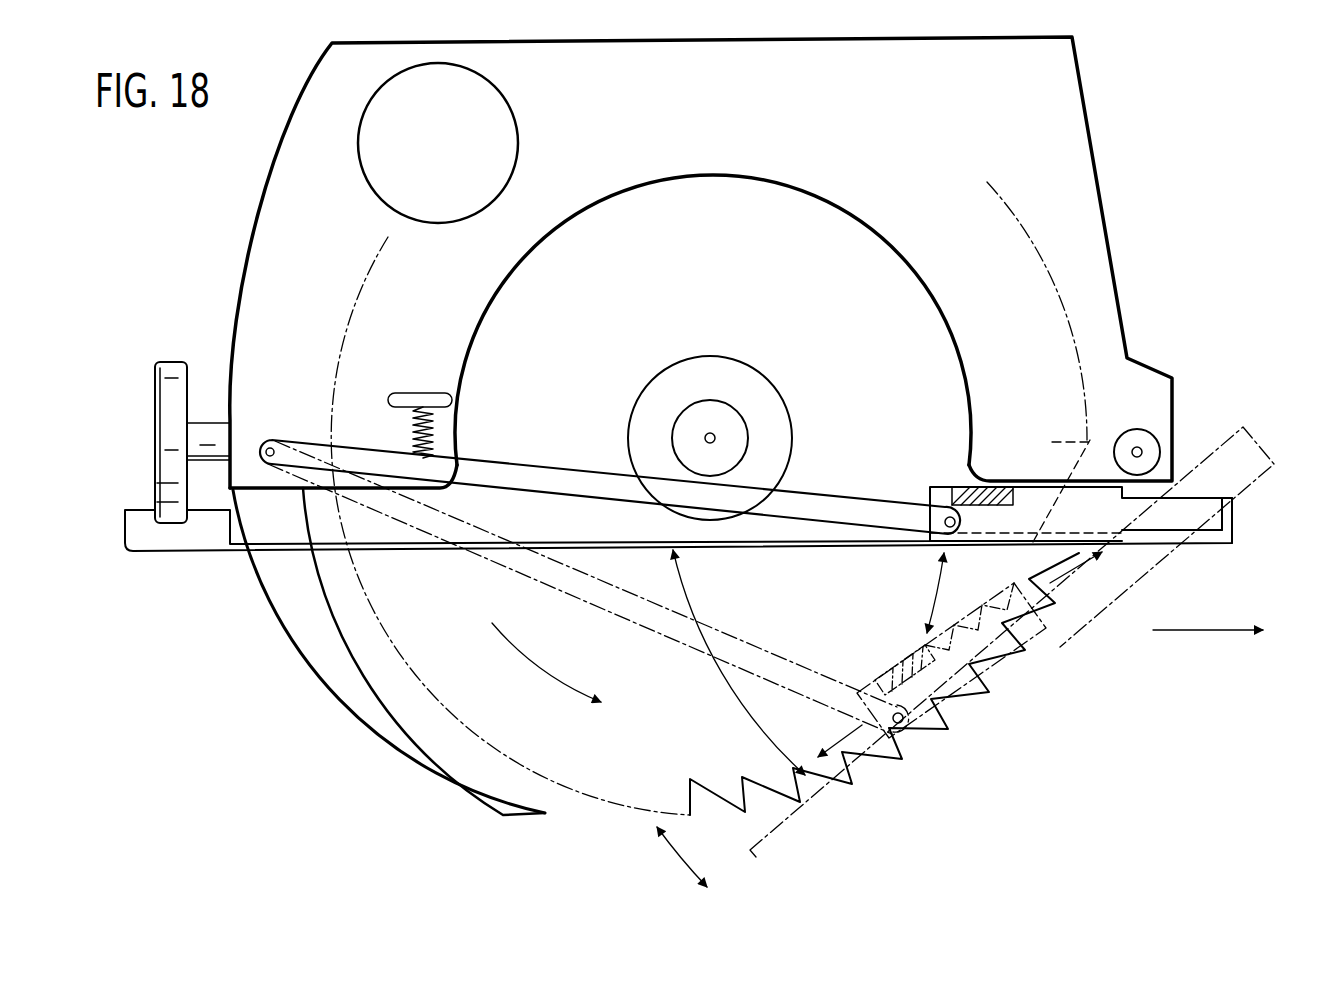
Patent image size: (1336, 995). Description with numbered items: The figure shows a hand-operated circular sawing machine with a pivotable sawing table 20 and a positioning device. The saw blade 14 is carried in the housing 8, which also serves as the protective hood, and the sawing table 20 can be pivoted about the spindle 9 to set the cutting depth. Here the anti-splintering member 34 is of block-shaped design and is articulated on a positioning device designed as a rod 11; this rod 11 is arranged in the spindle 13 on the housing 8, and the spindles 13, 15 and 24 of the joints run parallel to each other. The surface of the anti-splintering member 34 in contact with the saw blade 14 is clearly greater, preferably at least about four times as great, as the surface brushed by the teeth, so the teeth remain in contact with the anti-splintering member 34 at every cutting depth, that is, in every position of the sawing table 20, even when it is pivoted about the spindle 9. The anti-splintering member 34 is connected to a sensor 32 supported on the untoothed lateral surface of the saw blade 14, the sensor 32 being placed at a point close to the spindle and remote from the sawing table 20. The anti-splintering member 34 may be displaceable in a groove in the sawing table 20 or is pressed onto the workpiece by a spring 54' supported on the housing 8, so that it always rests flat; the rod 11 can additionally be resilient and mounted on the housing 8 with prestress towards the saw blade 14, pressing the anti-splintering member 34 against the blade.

The housing 8 is at (260, 307).
The spindle 9 is at (1143, 447).
The rod 11 is at (546, 471).
The spindle 13 is at (271, 447).
The saw blade 14 is at (452, 627).
The spindle 15 is at (935, 518).
The sawing table 20 is at (1263, 442).
The spindle 24 is at (716, 436).
The sensor 32 is at (964, 488).
The anti-splintering member 34 is at (1028, 497).
The spring 54' is at (450, 425).